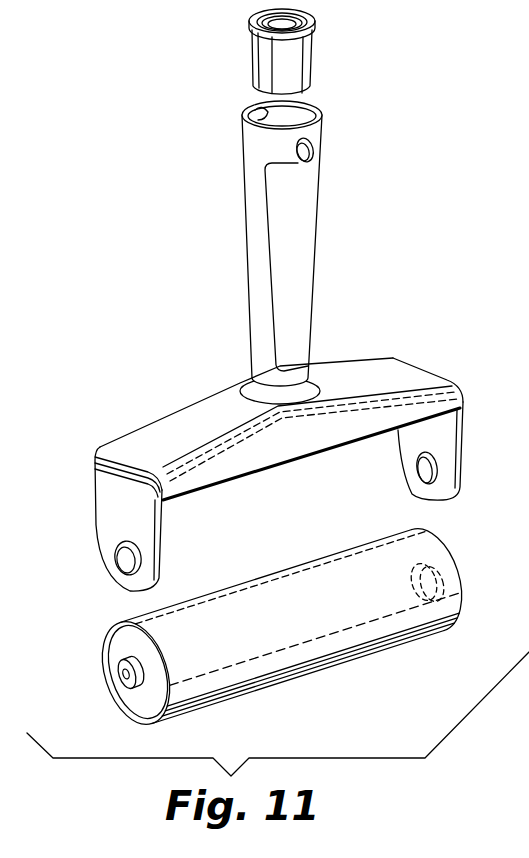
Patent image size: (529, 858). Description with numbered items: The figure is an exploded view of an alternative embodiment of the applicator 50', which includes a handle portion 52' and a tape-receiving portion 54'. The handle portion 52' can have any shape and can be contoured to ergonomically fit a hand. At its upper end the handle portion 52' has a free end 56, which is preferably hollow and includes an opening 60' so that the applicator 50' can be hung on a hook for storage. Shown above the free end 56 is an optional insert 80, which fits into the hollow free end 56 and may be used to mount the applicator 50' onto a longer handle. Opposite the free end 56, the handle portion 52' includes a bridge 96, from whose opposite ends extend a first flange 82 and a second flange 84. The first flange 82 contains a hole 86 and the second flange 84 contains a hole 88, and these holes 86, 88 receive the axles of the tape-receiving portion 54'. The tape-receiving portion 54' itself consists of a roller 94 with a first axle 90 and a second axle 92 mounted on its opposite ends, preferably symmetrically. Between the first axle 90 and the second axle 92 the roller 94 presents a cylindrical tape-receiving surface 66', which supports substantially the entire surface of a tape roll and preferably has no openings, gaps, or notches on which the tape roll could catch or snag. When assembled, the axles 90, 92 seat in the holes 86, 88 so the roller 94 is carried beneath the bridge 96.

The applicator 50' is at (396, 88).
The handle portion 52' is at (287, 252).
The tape-receiving portion 54' is at (285, 625).
The free end 56 is at (249, 142).
The opening 60' is at (343, 154).
The tape-receiving surface 66' is at (298, 608).
The insert 80 is at (251, 53).
The first flange 82 is at (105, 519).
The second flange 84 is at (447, 466).
The hole 86 is at (112, 565).
The hole 88 is at (428, 480).
The first axle 90 is at (120, 679).
The second axle 92 is at (455, 575).
The roller 94 is at (334, 652).
The bridge 96 is at (279, 474).